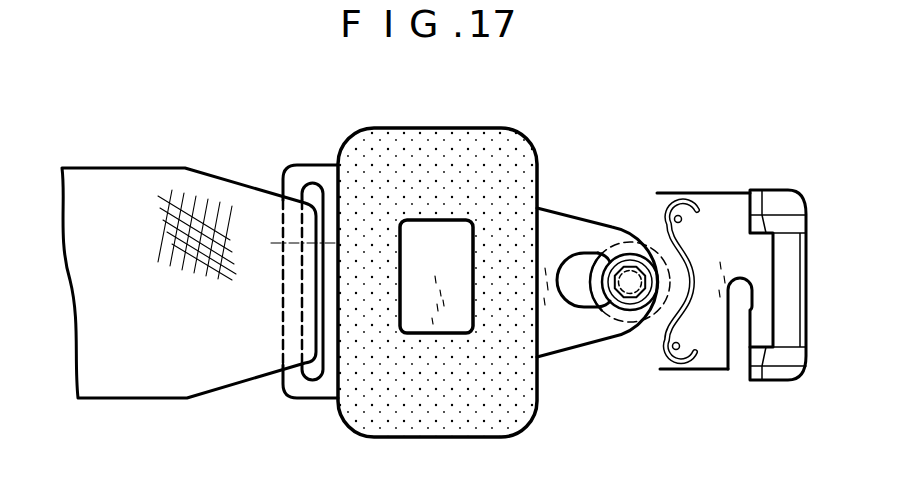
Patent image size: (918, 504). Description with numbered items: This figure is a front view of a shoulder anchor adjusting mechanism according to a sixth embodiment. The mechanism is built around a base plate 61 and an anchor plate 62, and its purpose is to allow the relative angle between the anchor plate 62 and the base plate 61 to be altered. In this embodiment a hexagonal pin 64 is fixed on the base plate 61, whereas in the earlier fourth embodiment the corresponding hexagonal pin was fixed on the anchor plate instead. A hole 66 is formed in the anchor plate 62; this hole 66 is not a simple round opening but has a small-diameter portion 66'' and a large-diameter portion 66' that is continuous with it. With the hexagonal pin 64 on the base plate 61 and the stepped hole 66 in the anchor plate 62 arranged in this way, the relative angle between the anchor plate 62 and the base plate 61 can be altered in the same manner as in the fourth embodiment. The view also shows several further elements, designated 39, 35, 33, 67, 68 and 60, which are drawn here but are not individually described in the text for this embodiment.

The webbing belt 39 is at (118, 191).
The frame slot bracket 35 is at (302, 385).
The cover 33 is at (403, 402).
The anchor plate 62 is at (547, 224).
The hexagonal pin 64 is at (622, 322).
The hole 66 is at (575, 325).
The large-diameter portion 66' is at (600, 202).
The small-diameter portion 66'' is at (657, 208).
The spring 67 is at (698, 206).
The base plate 61 is at (660, 365).
The tongue plate lower bar 68 is at (705, 369).
The end fitting 60 is at (789, 271).